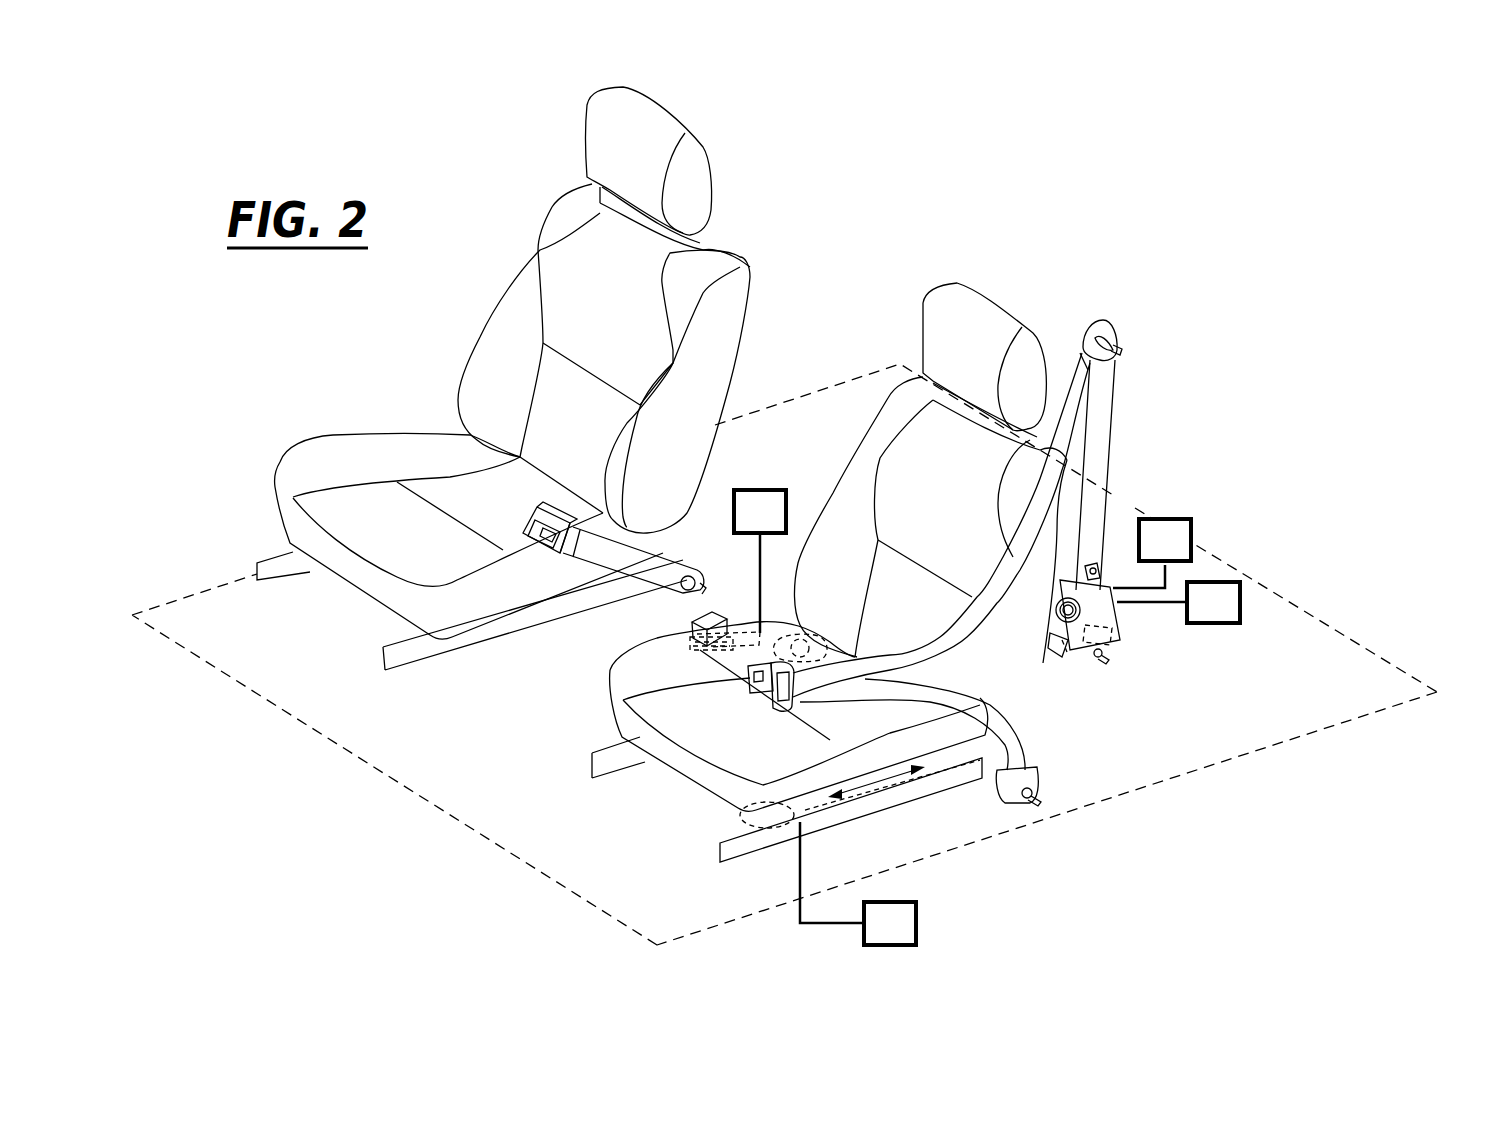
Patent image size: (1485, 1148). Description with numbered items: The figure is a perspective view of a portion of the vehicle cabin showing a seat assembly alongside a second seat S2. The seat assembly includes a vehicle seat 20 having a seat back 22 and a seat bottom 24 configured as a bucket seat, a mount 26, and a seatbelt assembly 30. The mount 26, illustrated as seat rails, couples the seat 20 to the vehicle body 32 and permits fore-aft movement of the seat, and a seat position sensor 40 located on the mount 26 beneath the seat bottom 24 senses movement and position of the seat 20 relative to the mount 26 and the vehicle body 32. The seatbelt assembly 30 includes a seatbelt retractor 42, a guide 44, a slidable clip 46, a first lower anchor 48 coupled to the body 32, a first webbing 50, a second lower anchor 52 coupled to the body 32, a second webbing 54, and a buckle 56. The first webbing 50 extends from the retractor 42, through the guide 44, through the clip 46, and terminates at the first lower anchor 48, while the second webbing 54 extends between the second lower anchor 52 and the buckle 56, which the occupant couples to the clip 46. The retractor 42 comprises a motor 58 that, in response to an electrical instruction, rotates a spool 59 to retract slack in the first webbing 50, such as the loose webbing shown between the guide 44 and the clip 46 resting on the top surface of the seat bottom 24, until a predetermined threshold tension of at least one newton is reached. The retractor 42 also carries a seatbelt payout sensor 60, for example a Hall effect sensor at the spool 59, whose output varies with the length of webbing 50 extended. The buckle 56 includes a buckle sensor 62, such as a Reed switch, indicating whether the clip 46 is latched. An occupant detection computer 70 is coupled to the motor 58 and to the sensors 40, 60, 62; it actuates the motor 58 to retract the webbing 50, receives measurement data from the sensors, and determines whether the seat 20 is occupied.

The second vehicle seat S2 is at (669, 96).
The vehicle seat 20 is at (802, 551).
The seat back 22 is at (905, 397).
The seat bottom 24 is at (610, 668).
The mount 26 is at (846, 832).
The seatbelt assembly 30 is at (943, 565).
The vehicle body 32 is at (537, 884).
The seat position sensor 40 is at (742, 816).
The seatbelt retractor 42 is at (1094, 651).
The guide 44 is at (1121, 316).
The clip 46 is at (763, 693).
The first lower anchor 48 is at (1020, 813).
The first webbing 50 is at (1100, 466).
The second lower anchor 52 is at (831, 645).
The second webbing 54 is at (750, 620).
The buckle 56 is at (696, 623).
The motor 58 is at (1065, 652).
The spool 59 is at (1060, 613).
The seatbelt payout sensor 60 is at (1115, 630).
The buckle sensor 62 is at (700, 652).
The occupant detection computer 70 is at (751, 526).